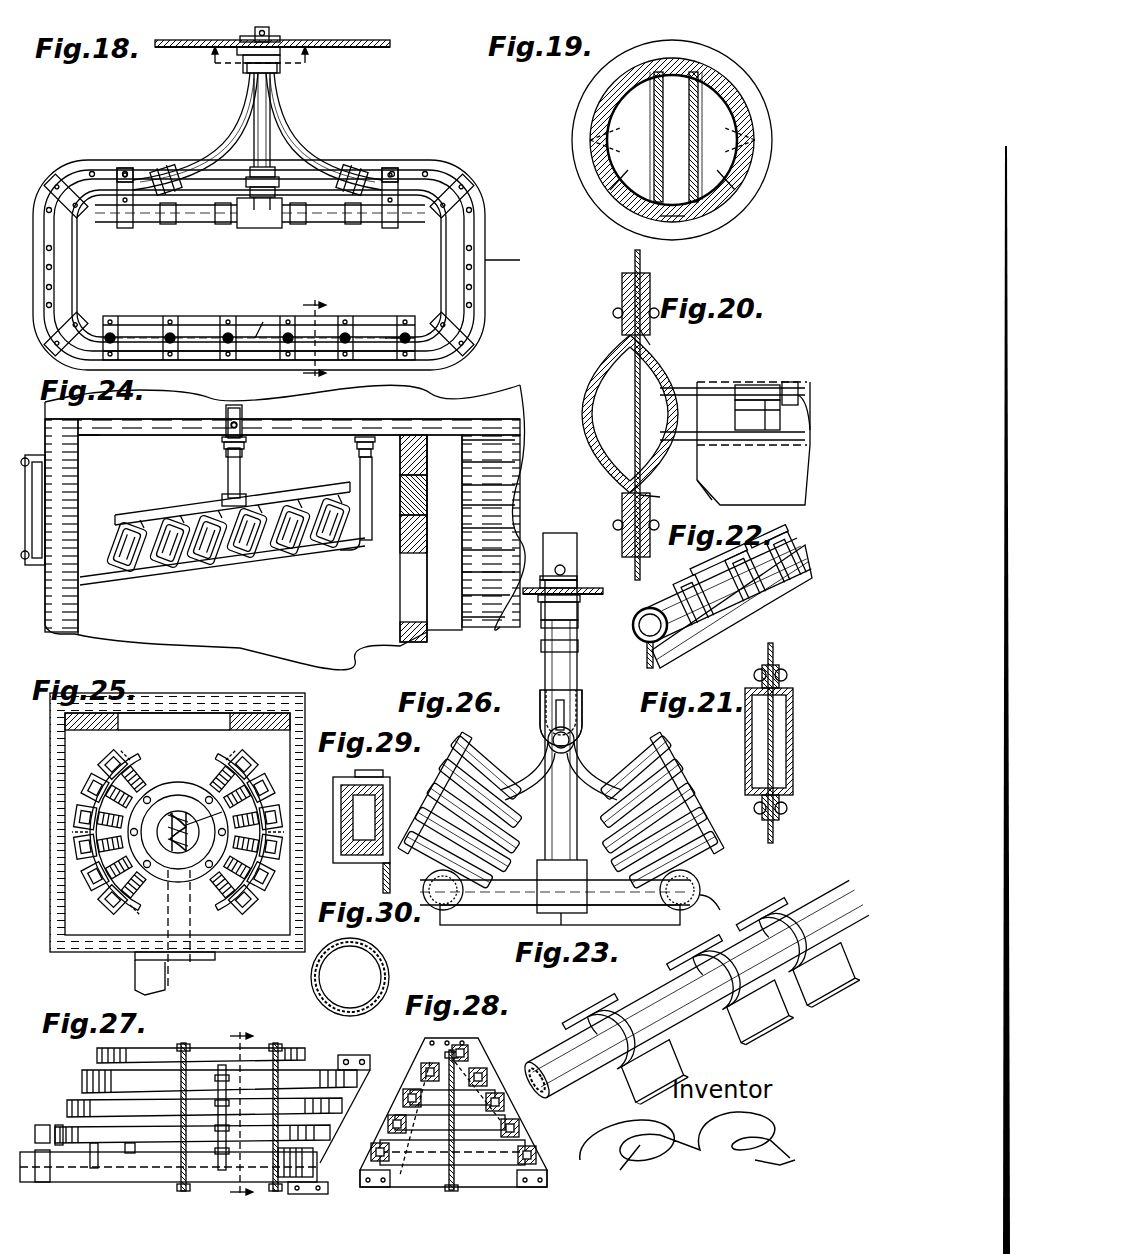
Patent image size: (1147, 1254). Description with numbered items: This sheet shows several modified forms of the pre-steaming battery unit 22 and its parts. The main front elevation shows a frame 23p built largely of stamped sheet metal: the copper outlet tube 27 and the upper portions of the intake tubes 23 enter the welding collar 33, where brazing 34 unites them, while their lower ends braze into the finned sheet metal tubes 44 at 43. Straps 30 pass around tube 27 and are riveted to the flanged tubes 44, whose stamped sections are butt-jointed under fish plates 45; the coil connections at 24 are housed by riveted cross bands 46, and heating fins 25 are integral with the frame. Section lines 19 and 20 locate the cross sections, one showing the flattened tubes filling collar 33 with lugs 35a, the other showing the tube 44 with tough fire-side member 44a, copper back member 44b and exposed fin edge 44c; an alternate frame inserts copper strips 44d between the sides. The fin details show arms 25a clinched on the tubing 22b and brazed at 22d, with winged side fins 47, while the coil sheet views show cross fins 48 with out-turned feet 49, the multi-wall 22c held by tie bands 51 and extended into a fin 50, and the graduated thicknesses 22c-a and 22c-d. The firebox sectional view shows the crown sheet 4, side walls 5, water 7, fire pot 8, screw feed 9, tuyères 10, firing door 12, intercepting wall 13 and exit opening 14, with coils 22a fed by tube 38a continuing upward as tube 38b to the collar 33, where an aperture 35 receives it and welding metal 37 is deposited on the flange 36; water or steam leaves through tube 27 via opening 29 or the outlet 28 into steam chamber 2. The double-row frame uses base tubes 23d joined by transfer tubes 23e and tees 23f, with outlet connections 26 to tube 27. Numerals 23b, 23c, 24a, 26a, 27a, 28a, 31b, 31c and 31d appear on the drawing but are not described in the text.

In FIG. 24, the steam compartment 2 is at (290, 405).
In FIG. 18, the crown sheet 4 is at (340, 47).
In FIG. 24, the crown sheet 4 is at (110, 435).
In FIG. 26, the crown sheet 4 is at (598, 595).
In FIG. 24, the side walls 5 is at (78, 460).
In FIG. 25, the side walls 5 is at (65, 915).
In FIG. 24, the water 7 is at (450, 418).
In FIG. 25, the water 7 is at (50, 745).
In FIG. 24, the fire pot 8 is at (505, 455).
In FIG. 25, the fire pot 8 is at (155, 805).
In FIG. 25, the screw feed 9 is at (209, 814).
In FIG. 25, the tuyères 10 is at (178, 782).
In FIG. 24, the firing door 12 is at (30, 565).
In FIG. 25, the firing door 12 is at (215, 960).
In FIG. 24, the intercepting wall 13 is at (427, 488).
In FIG. 25, the intercepting wall 13 is at (245, 713).
In FIG. 24, the exit opening 14 is at (405, 588).
In FIG. 25, the exit opening 14 is at (190, 720).
In FIG. 18, the section line 19— 19 is at (260, 60).
In FIG. 18, the section line 20— 20 is at (324, 336).
In FIG. 18, the battery unit 22 is at (248, 305).
In FIG. 25, the battery unit 22 is at (252, 775).
In FIG. 26, the battery unit 22 is at (538, 672).
In FIG. 20, the coils 22a is at (765, 400).
In FIG. 24, the coils 22a is at (300, 575).
In FIG. 25, the coils 22a is at (88, 780).
In FIG. 26, the coils 22a is at (480, 730).
In FIG. 22, the tubing 22b is at (735, 560).
In FIG. 29, the tubing 22b is at (365, 817).
In FIG. 30, the tubing 22b is at (372, 952).
In FIG. 23, the tubing 22b is at (540, 1058).
In FIG. 27, the tubing 22b is at (97, 1056).
In FIG. 28, the tubing 22b is at (465, 1038).
In FIG. 29, the multi-wall 22c is at (340, 863).
In FIG. 27, the multi-wall 22c is at (305, 1075).
In FIG. 20, the brazing 22d is at (795, 382).
In FIG. 22, the brazing 22d is at (660, 598).
In FIG. 29, the brazing 22d is at (341, 800).
In FIG. 23, the brazing 22d is at (612, 1068).
In FIG. 30, the wall protection of lower turn A 22c-a is at (328, 1010).
In FIG. 30, the wall protection of upper turn D 22c-d is at (338, 977).
In FIG. 18, the inlet tube 23 is at (228, 120).
In FIG. 26, the inlet tube 23 is at (578, 645).
In FIG. 26, the swivel joint 23b is at (540, 700).
In FIG. 18, the pipe coupling 23c is at (160, 165).
In FIG. 26, the longitudinal supporting tubes 23d is at (700, 882).
In FIG. 26, the transfer tubes 23e is at (490, 908).
In FIG. 26, the T's 23f is at (563, 925).
In FIG. 18, the supporting frame 23p is at (263, 322).
In FIG. 25, the supporting frame 23p is at (95, 790).
In FIG. 18, the connections 24 is at (390, 315).
In FIG. 20, the connections 24 is at (710, 380).
In FIG. 26, the connections 24 is at (425, 880).
In FIG. 26, the header end cap 24a is at (423, 890).
In FIG. 25, the heating fins 25 is at (173, 834).
In FIG. 26, the heating fins 25 is at (585, 770).
In FIG. 20, the arms 25a is at (745, 395).
In FIG. 22, the arms 25a is at (700, 560).
In FIG. 23, the arms 25a is at (622, 1012).
In FIG. 26, the outlet connections 26 is at (572, 740).
In FIG. 18, the pipe coupling 26a is at (295, 224).
In FIG. 18, the outlet tube 27 is at (208, 205).
In FIG. 19, the outlet tube 27 is at (683, 216).
In FIG. 24, the outlet tube 27 is at (228, 415).
In FIG. 25, the outlet tube 27 is at (178, 832).
In FIG. 26, the outlet tube 27 is at (540, 545).
In FIG. 18, the pipe union 27a is at (279, 182).
In FIG. 24, the outlet 28 is at (240, 408).
In FIG. 26, the outlet 28 is at (570, 533).
In FIG. 27, the outlet 28 is at (241, 1112).
In FIG. 24, the distributing pipe 28a is at (300, 478).
In FIG. 18, the water intake and outlet opening 29 is at (268, 38).
In FIG. 24, the water intake and outlet opening 29 is at (238, 425).
In FIG. 26, the water intake and outlet opening 29 is at (565, 568).
In FIG. 18, the strap 30 is at (125, 228).
In FIG. 26, the tube 31b is at (445, 770).
In FIG. 20, the fin member 31c is at (701, 497).
In FIG. 22, the fin member 31c is at (685, 660).
In FIG. 26, the fin member 31c is at (458, 740).
In FIG. 22, the pin 31d is at (645, 655).
In FIG. 18, the collar 33 is at (277, 70).
In FIG. 19, the collar 33 is at (740, 95).
In FIG. 24, the collar 33 is at (371, 453).
In FIG. 26, the collar 33 is at (578, 625).
In FIG. 19, the brazing 34 is at (692, 78).
In FIG. 20, the brazing 34 is at (659, 497).
In FIG. 26, the aperture 35 is at (583, 588).
In FIG. 19, the projecting lugs 35a is at (676, 136).
In FIG. 26, the projecting lugs 35a is at (577, 583).
In FIG. 18, the flange 36 is at (237, 52).
In FIG. 19, the flange 36 is at (740, 60).
In FIG. 24, the flange 36 is at (224, 447).
In FIG. 26, the flange 36 is at (541, 612).
In FIG. 18, the welding metal 37 is at (280, 52).
In FIG. 24, the welding metal 37 is at (246, 439).
In FIG. 26, the welding metal 37 is at (538, 598).
In FIG. 24, the tube 38a is at (148, 575).
In FIG. 24, the tube 38b is at (382, 492).
In FIG. 18, the joint points 43 is at (150, 150).
In FIG. 18, the flanged tube 44 is at (95, 290).
In FIG. 20, the fire-side member 44a is at (585, 375).
In FIG. 21, the fire-side member 44a is at (745, 742).
In FIG. 20, the back member 44b is at (670, 440).
In FIG. 21, the back member 44b is at (781, 680).
In FIG. 18, the fin edge 44c is at (505, 265).
In FIG. 20, the fin edge 44c is at (635, 262).
In FIG. 26, the fin edge 44c is at (723, 740).
In FIG. 20, the sheet metal strips 44d is at (636, 415).
In FIG. 21, the sheet metal strips 44d is at (773, 655).
In FIG. 18, the fish plates 45 is at (58, 196).
In FIG. 18, the cross bands receiving connections 46 is at (228, 316).
In FIG. 20, the cross bands receiving connections 46 is at (655, 342).
In FIG. 20, the winged fin 47 is at (760, 430).
In FIG. 26, the winged fin 47 is at (716, 903).
In FIG. 23, the winged fin 47 is at (735, 915).
In FIG. 27, the cross fins 48 is at (183, 1043).
In FIG. 28, the cross fins 48 is at (455, 1050).
In FIG. 27, the out-turned feet 49 is at (178, 1043).
In FIG. 28, the out-turned feet 49 is at (470, 1120).
In FIG. 29, the fin 50 is at (383, 880).
In FIG. 27, the fin 50 is at (130, 1170).
In FIG. 28, the fin 50 is at (547, 1172).
In FIG. 26, the tie bands 51 is at (410, 800).
In FIG. 29, the tie bands 51 is at (390, 790).
In FIG. 27, the tie bands 51 is at (218, 1080).